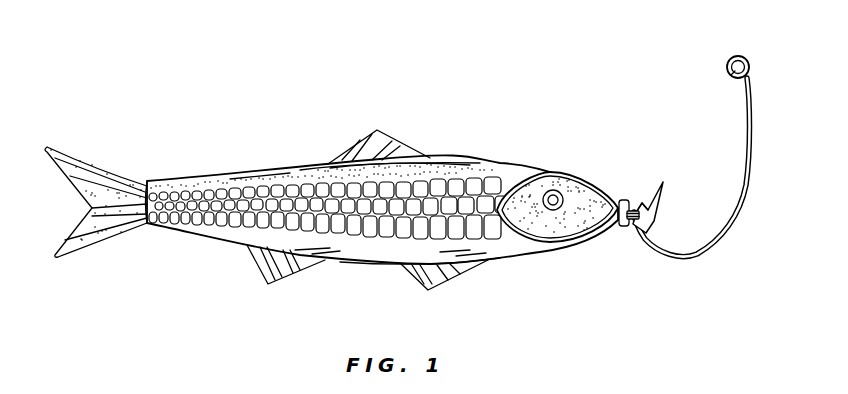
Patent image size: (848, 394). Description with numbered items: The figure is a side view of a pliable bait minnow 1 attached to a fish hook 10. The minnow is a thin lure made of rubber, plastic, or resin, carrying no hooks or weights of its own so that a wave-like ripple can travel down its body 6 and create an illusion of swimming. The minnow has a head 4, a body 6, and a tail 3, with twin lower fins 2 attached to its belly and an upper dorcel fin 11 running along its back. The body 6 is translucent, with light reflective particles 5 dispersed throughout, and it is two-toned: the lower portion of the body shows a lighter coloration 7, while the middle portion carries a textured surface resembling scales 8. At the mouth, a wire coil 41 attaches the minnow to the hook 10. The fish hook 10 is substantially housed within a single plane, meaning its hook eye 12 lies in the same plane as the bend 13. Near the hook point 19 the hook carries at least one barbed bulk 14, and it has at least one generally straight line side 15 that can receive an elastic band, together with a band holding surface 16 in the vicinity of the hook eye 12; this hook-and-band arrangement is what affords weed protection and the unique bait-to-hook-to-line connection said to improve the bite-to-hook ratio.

The pliable bait minnow 1 is at (215, 242).
The twin lower fins 2 is at (422, 280).
The tail 3 is at (105, 157).
The head 4 is at (567, 190).
The light reflective particles 5 is at (460, 158).
The body 6 is at (282, 180).
The lighter coloration 7 is at (500, 253).
The scales 8 is at (500, 177).
The fish hook 10 is at (752, 153).
The upper dorcel fin 11 is at (357, 133).
The hook eye 12 is at (733, 57).
The bend 13 is at (700, 238).
The barbed bulk 14 is at (658, 205).
The generally straight line side 15 is at (643, 240).
The band holding surface 16 is at (727, 70).
The hook point 19 is at (663, 182).
The wire coil 41 is at (628, 225).